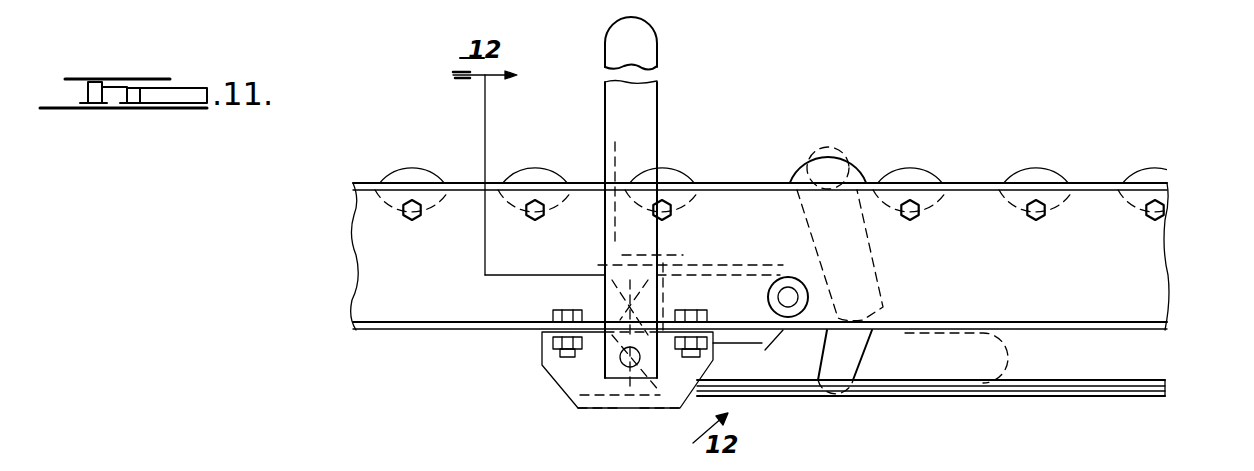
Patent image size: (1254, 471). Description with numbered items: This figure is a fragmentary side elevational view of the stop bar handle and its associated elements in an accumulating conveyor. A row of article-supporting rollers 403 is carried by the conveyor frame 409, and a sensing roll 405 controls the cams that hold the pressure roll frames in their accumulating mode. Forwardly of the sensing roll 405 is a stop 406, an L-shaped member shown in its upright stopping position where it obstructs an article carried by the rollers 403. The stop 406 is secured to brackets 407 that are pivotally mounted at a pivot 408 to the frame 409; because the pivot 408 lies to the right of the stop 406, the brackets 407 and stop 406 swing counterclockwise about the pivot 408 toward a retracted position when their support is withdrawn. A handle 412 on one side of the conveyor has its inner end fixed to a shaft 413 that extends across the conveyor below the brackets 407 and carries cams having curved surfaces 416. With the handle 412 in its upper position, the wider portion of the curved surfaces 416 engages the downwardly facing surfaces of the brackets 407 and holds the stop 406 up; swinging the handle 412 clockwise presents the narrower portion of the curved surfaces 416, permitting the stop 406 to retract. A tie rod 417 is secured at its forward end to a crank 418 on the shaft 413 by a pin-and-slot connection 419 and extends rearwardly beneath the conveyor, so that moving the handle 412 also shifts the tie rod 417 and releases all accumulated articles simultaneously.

The article-supporting rollers 403 is at (1043, 173).
The sensing roll 405 is at (863, 148).
The stop 406 is at (607, 152).
The brackets 407 is at (762, 343).
The pivot 408 is at (792, 302).
The frame 409 is at (1145, 293).
The handle 412 is at (647, 112).
The shaft 413 is at (627, 363).
The curved surfaces 416 is at (593, 295).
The tie rod 417 is at (1063, 388).
The crank 418 is at (625, 413).
The pin-and-slot connection 419 is at (660, 398).